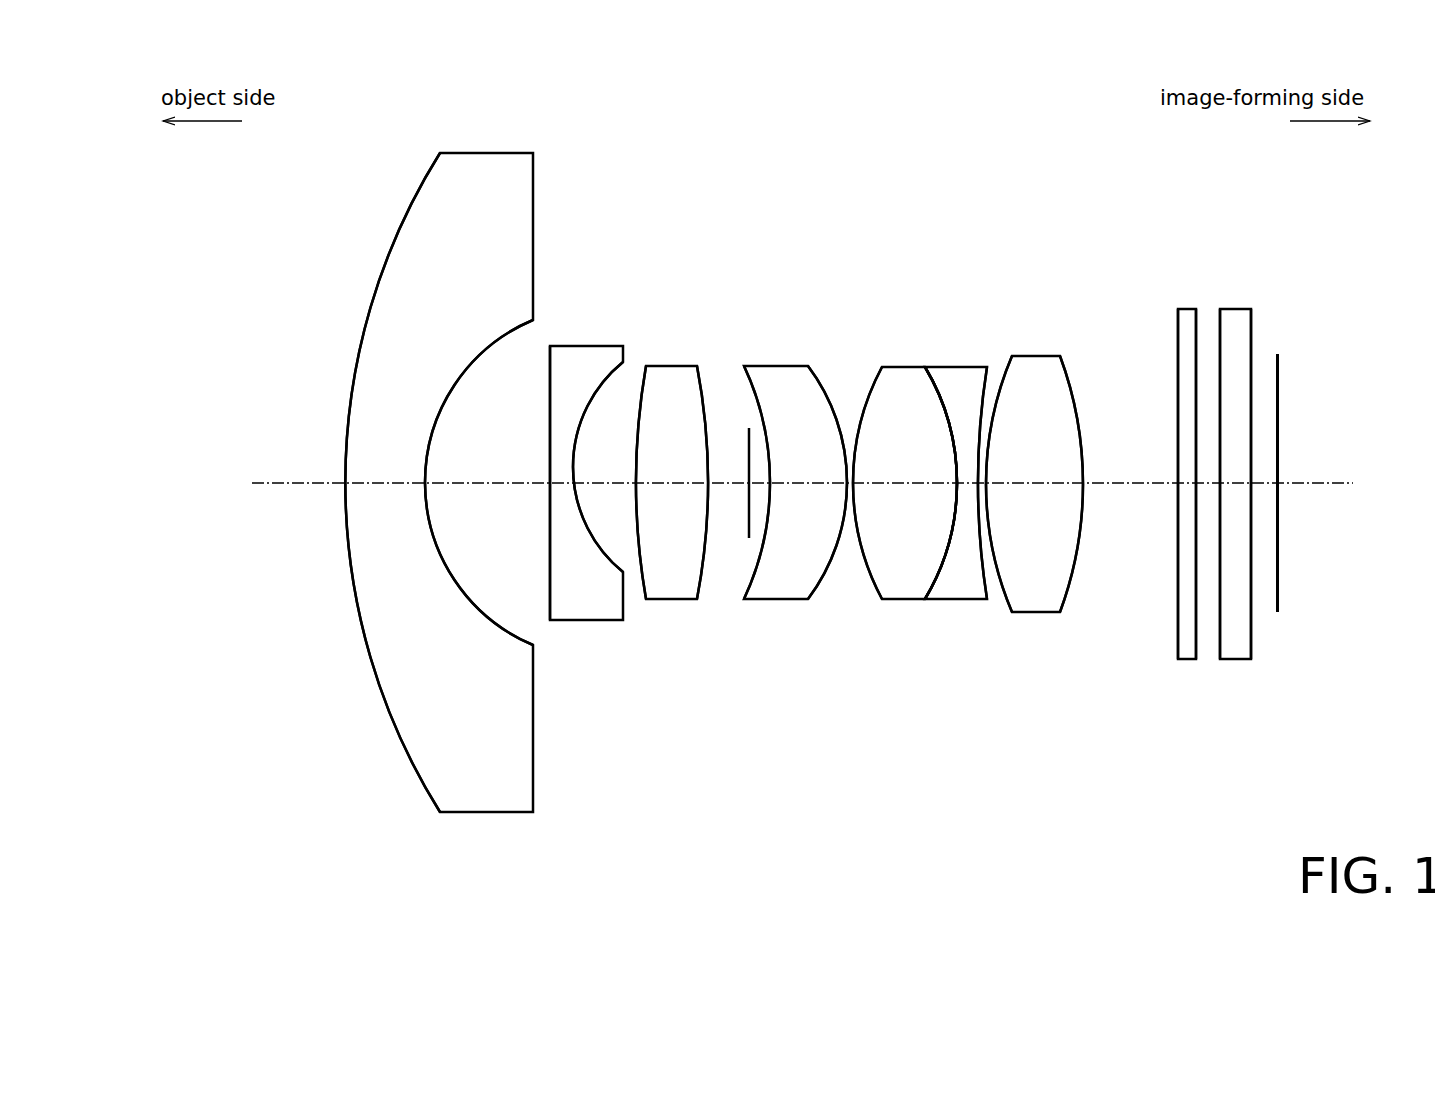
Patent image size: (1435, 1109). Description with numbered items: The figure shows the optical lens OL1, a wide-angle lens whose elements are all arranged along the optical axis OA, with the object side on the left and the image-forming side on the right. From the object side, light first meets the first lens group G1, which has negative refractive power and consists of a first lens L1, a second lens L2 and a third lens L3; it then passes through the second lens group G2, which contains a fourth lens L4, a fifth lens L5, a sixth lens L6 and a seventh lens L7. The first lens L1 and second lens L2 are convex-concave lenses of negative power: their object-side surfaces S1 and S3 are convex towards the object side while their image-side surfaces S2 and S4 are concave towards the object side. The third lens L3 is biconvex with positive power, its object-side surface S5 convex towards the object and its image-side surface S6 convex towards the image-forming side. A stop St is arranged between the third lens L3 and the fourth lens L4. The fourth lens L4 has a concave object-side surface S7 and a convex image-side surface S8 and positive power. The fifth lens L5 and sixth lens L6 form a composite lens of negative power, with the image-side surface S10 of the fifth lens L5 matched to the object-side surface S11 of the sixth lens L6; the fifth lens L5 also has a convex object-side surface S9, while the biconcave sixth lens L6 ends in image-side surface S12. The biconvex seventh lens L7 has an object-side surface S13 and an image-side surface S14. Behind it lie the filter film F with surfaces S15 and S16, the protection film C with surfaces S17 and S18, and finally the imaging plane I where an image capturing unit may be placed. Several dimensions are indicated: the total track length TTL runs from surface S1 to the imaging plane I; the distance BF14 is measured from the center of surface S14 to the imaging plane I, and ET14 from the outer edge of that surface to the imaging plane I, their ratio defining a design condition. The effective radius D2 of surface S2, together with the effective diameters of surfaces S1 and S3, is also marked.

The optical lens OL1 is at (158, 77).
The first lens group G1 is at (712, 108).
The second lens group G2 is at (1047, 688).
The first lens L1 is at (517, 168).
The second lens L2 is at (587, 360).
The third lens L3 is at (675, 385).
The fourth lens L4 is at (785, 577).
The fifth lens L5 is at (900, 603).
The sixth lens L6 is at (962, 603).
The seventh lens L7 is at (1036, 614).
The object-side surface of first lens S1 is at (385, 266).
The image-side surface of first lens S2 is at (457, 378).
The object-side surface of second lens S3 is at (547, 380).
The image-side surface of second lens S4 is at (590, 438).
The object-side surface of third lens S5 is at (637, 418).
The image-side surface of third lens S6 is at (703, 384).
The stop St is at (748, 428).
The object-side surface of fourth lens S7 is at (757, 568).
The image-side surface of fourth lens S8 is at (822, 385).
The object-side surface of fifth lens S9 is at (868, 386).
The image-side surface of fifth lens S10 is at (950, 405).
The object-side surface of sixth lens S11 is at (940, 404).
The image-side surface of sixth lens S12 is at (983, 413).
The object-side surface of seventh lens S13 is at (1008, 362).
The image-side surface of seventh lens S14 is at (1068, 372).
The object-side surface of filter film S15 is at (1177, 325).
The image-side surface of filter film S16 is at (1197, 323).
The object-side surface of protection film S17 is at (1221, 360).
The image-side surface of protection film S18 is at (1252, 360).
The filter film F is at (1188, 662).
The protection film C is at (1237, 662).
The imaging plane I is at (1279, 410).
The optical axis OA is at (1330, 490).
The effective radius of image-side surface of first lens D2 is at (533, 320).
The total track length TTL is at (345, 483).
The back focal distance BF14 is at (1083, 483).
The edge distance ET14 is at (1060, 612).